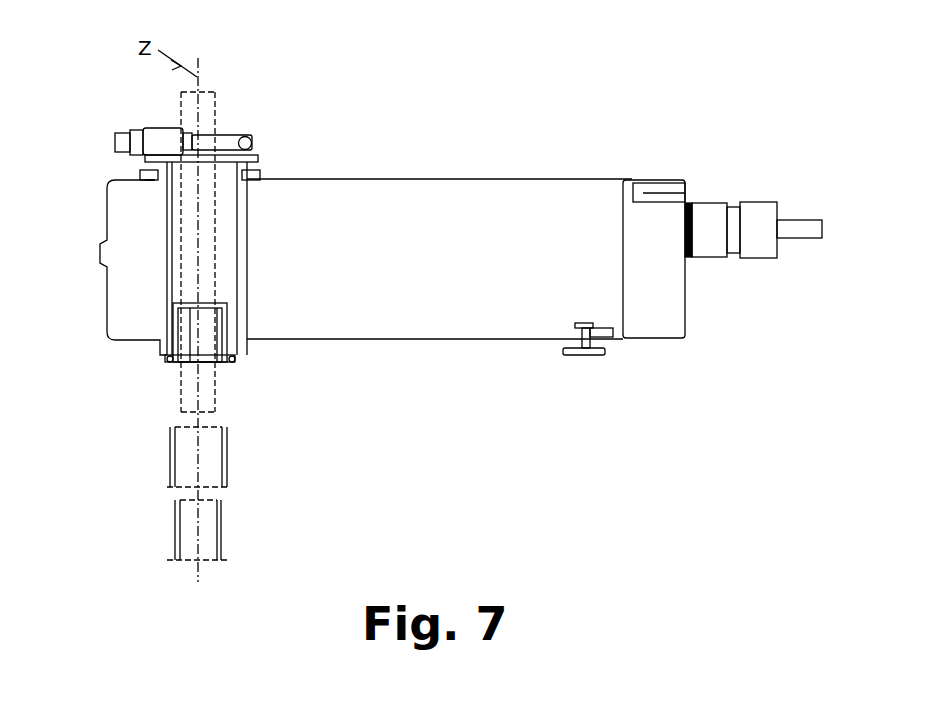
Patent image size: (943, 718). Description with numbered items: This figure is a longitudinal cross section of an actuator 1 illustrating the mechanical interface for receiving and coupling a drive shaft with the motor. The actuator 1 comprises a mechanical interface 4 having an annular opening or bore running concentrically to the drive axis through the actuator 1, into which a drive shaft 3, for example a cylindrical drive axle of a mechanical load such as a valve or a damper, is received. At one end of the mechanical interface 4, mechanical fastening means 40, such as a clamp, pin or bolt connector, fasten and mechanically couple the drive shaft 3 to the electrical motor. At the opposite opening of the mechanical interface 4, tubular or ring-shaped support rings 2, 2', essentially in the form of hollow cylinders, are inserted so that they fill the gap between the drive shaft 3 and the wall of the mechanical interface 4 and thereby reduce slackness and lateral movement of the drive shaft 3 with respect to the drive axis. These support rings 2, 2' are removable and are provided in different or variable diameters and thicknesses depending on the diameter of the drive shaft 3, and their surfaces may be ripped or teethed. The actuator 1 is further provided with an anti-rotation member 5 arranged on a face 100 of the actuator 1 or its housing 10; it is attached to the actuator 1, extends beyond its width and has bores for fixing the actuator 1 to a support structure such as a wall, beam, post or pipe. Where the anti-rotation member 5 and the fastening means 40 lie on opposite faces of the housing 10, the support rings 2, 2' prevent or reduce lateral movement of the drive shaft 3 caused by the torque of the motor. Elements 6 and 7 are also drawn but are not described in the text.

The actuator 1 is at (84, 379).
The support ring 2 is at (195, 443).
The support ring 2' is at (202, 421).
The drive shaft 3 is at (204, 103).
The mechanical interface 4 is at (250, 213).
The anti-rotation member 5 is at (588, 354).
The end cap 6 is at (668, 308).
The connector cable 7 is at (805, 232).
The housing 10 is at (452, 177).
The mechanical fastening means 40 is at (167, 142).
The face 100 is at (439, 261).